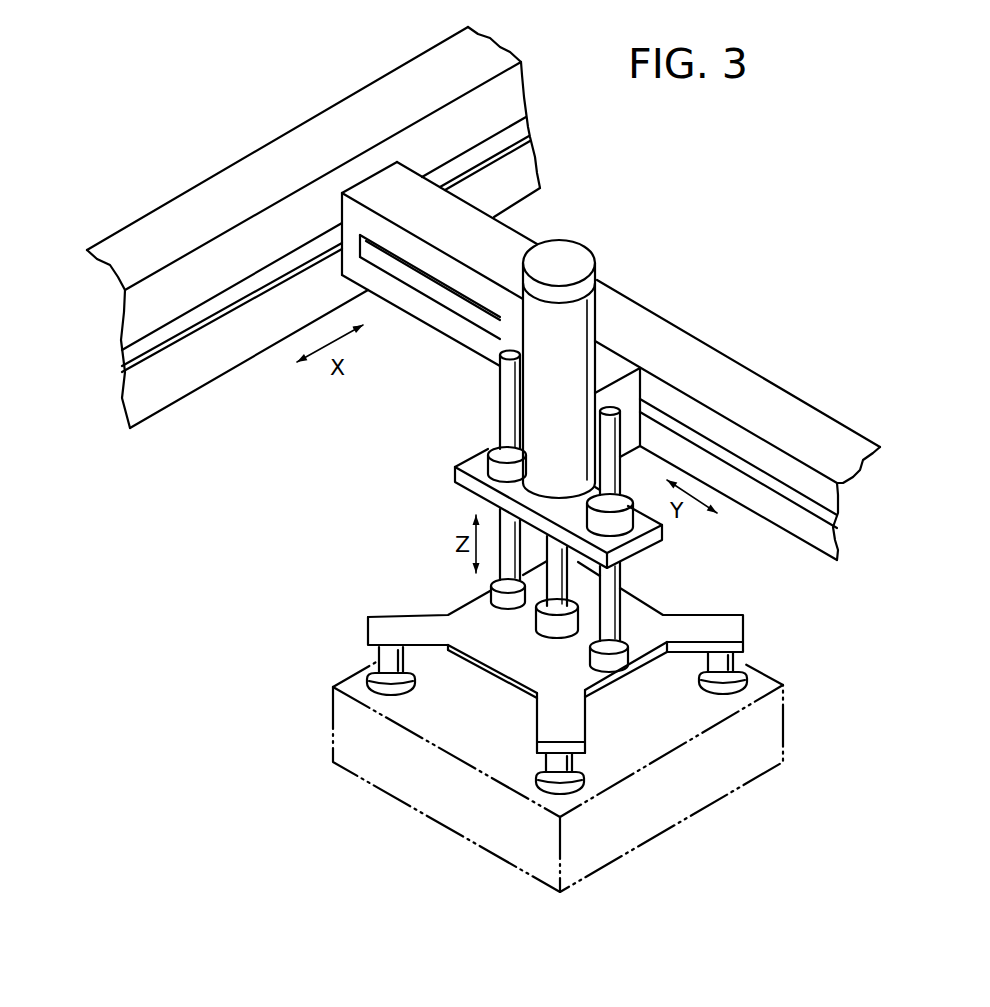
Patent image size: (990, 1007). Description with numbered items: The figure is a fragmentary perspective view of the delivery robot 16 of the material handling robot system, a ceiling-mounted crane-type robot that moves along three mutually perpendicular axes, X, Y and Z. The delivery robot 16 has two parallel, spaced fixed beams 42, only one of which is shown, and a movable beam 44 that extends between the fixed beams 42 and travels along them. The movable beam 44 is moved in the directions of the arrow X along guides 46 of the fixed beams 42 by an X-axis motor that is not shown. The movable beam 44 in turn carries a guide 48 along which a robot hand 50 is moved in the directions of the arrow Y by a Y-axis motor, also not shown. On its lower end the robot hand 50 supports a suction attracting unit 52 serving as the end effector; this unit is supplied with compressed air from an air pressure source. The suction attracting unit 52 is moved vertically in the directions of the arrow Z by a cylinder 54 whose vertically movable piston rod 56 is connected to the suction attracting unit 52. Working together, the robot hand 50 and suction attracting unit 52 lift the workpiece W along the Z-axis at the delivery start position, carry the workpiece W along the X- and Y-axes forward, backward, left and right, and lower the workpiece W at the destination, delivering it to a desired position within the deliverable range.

The delivery robot 16 is at (791, 153).
The fixed beam 42 is at (293, 150).
The movable beam 44 is at (740, 383).
The guide 46 is at (197, 318).
The guide 48 is at (797, 497).
The robot hand 50 is at (417, 472).
The suction attracting unit 52 is at (705, 627).
The cylinder 54 is at (547, 383).
The piston rod 56 is at (553, 580).
The workpiece W is at (783, 745).